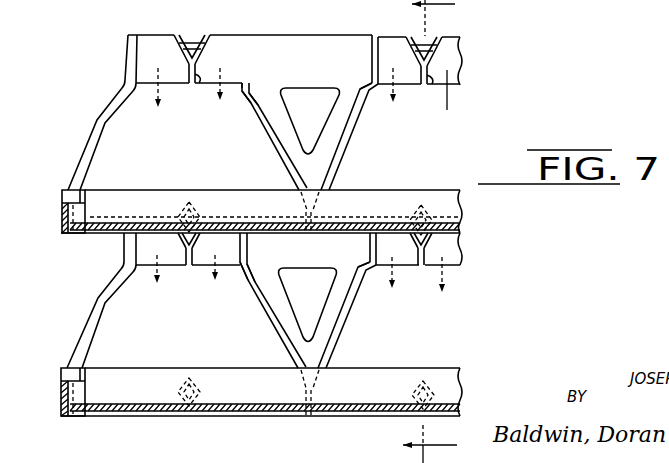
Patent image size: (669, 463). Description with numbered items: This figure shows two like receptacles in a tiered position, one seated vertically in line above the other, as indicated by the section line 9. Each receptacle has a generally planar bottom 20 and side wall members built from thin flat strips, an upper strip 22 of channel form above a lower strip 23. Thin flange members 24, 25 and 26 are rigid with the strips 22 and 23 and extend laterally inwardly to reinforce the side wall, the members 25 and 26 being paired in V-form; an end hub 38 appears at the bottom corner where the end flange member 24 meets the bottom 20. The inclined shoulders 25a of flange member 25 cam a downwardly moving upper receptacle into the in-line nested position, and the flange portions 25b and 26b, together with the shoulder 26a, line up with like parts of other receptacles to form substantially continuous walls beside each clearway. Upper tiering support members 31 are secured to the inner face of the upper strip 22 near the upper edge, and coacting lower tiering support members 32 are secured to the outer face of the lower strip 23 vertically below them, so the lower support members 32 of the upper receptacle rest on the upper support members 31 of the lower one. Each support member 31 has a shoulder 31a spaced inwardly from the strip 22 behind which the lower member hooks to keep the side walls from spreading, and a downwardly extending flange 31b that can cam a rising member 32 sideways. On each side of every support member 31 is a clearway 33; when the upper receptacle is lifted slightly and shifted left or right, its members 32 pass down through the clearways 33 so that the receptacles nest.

The section line 9- 9 is at (426, 231).
The bottom 20 is at (260, 222).
The upper strip 22 is at (268, 42).
The lower strip 23 is at (275, 304).
The end flange member 24 is at (99, 145).
The flange member 25 is at (272, 139).
The inclined shoulder 25a is at (258, 108).
The flange portion 25b is at (241, 34).
The flange member 26 is at (346, 126).
The shoulder of second inner leg 26a is at (369, 91).
The flange portion 26b is at (377, 40).
The upper tiering support member 31 is at (203, 37).
The shoulder 31a is at (190, 42).
The downwardly extending flange 31b is at (196, 86).
The lower tiering support member 32 is at (189, 201).
The clearway 33 is at (297, 167).
The end hub 38 is at (62, 202).